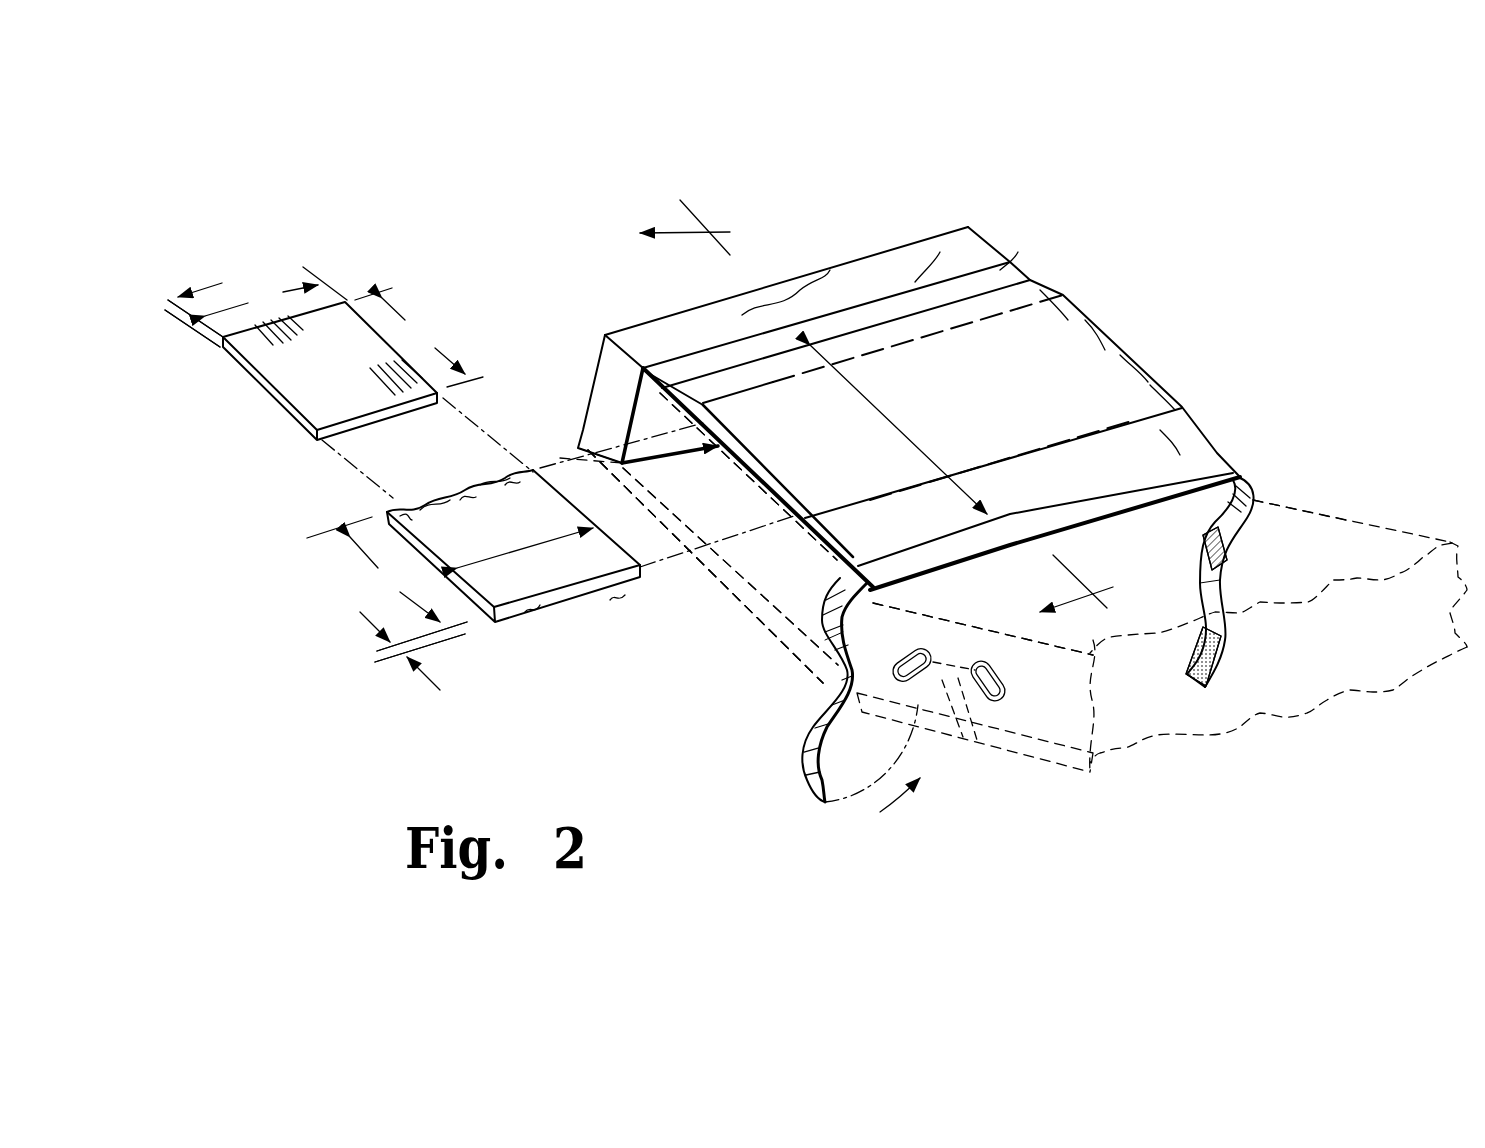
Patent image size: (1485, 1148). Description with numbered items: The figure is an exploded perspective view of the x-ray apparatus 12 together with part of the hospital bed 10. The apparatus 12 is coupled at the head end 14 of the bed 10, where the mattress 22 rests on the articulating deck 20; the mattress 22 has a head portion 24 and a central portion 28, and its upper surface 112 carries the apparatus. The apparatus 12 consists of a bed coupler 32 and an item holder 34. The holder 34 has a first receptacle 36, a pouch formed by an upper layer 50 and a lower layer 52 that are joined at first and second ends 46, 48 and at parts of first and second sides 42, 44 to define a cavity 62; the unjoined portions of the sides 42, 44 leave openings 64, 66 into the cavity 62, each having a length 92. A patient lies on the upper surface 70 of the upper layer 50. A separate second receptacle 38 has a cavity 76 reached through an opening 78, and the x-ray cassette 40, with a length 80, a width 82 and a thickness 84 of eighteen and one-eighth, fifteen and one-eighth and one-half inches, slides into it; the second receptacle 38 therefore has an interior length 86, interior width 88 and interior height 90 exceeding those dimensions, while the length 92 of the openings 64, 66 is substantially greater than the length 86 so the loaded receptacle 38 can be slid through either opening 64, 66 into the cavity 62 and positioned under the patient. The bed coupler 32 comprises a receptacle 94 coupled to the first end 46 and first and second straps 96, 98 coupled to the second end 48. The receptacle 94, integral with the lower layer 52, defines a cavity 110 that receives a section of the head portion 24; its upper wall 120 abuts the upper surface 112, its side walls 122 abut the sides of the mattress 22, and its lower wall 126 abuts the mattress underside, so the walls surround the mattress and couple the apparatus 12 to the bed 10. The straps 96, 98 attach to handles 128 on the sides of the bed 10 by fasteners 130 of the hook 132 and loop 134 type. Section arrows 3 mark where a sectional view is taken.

The hospital bed 10 is at (1212, 283).
The x-ray apparatus 12 is at (1065, 268).
The head end 14 is at (632, 478).
The articulating deck 20 is at (1048, 752).
The mattress 22 is at (962, 640).
The head portion 24 is at (770, 578).
The central portion 28 is at (1355, 545).
The bed coupler 32 is at (708, 325).
The item holder 34 is at (535, 632).
The first receptacle 36 is at (1110, 338).
The second receptacle 38 is at (565, 588).
The x-ray cassette 40 is at (310, 398).
The first side 42 is at (1152, 384).
The second side 44 is at (745, 476).
The first end 46 is at (1010, 260).
The second end 48 is at (1195, 470).
The upper layer 50 is at (1058, 308).
The lower layer 52 is at (840, 535).
The cavity 62 is at (760, 488).
The first opening 64 is at (715, 452).
The second opening 66 is at (1200, 388).
The upper surface 70 is at (1128, 366).
The cavity 76 is at (455, 500).
The opening 78 is at (493, 478).
The length 80 is at (419, 337).
The width 82 is at (256, 307).
The thickness 84 is at (212, 283).
The interior length 86 is at (387, 589).
The interior width 88 is at (528, 560).
The interior height 90 is at (363, 623).
The length 92 is at (888, 430).
The receptacle 94 is at (890, 258).
The first strap 96 is at (820, 700).
The second strap 98 is at (1210, 590).
The cavity 110 is at (668, 470).
The upper surface 112 is at (1305, 518).
The upper wall 120 is at (805, 290).
The side walls 122 is at (605, 396).
The lower wall 126 is at (625, 462).
The handles 128 is at (985, 742).
The fastener 130 is at (1208, 548).
The hook 132 is at (1225, 548).
The loop 134 is at (1212, 650).
The section line FIG. 3 is at (887, 403).